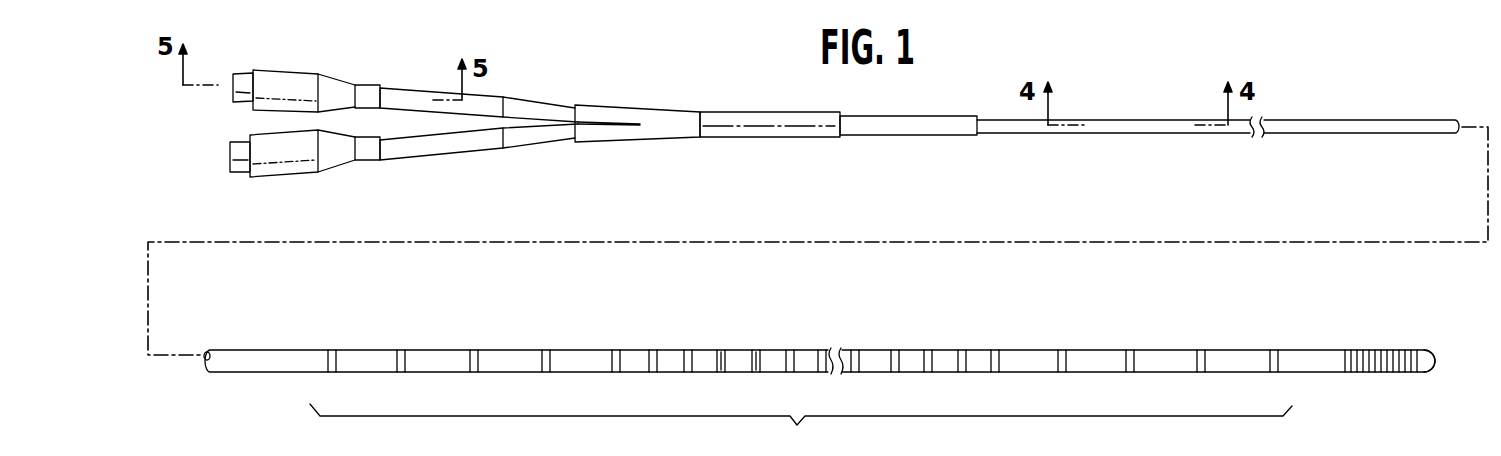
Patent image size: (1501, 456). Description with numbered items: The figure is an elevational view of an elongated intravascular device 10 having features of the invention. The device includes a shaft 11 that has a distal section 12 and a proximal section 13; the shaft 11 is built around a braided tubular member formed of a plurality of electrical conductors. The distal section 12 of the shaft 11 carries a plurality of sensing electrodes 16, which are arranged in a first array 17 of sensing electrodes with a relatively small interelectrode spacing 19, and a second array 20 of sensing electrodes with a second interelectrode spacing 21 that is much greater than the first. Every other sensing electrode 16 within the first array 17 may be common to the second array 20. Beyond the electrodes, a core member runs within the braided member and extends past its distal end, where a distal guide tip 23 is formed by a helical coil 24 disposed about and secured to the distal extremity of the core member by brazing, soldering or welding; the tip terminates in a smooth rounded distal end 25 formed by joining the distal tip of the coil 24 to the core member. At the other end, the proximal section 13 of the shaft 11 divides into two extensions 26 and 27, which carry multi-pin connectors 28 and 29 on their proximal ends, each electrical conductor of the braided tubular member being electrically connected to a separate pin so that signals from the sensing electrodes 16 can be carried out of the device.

The elongated intravascular device 10 is at (736, 91).
The shaft 11 is at (1335, 133).
The distal section 12 is at (360, 350).
The proximal section 13 is at (1015, 134).
The sensing electrodes 16 is at (1272, 350).
The first array 17 is at (608, 331).
The first interelectrode spacing 19 is at (768, 376).
The second array 20 is at (797, 425).
The second interelectrode spacing 21 is at (1210, 333).
The distal guide tip 23 is at (1393, 365).
The helical coil 24 is at (1360, 372).
The smooth rounded distal end 25 is at (1428, 350).
The proximal extension 26 is at (415, 88).
The proximal extension 27 is at (415, 150).
The multi-pin connector 28 is at (245, 73).
The multi-pin connector 29 is at (245, 172).